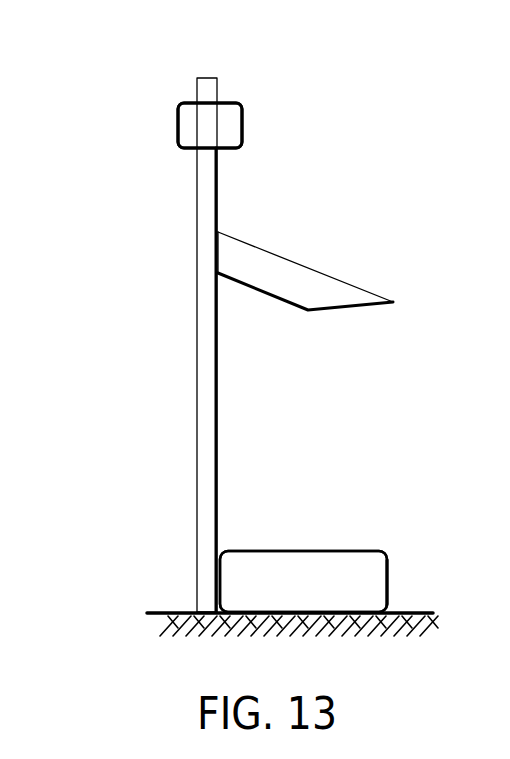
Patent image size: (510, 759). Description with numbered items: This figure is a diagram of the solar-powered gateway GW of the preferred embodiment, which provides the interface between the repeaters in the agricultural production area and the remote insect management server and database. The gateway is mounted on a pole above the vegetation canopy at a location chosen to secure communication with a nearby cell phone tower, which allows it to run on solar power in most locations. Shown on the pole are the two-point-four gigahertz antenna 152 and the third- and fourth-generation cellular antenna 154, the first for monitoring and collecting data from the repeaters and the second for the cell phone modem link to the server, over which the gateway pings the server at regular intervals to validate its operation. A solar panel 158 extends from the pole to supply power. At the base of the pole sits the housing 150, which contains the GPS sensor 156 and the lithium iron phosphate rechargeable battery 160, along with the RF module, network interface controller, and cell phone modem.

The housing 150 is at (308, 550).
The 2.4 GHz antenna 152 is at (178, 121).
The 3G/4G antenna 154 is at (210, 125).
The GPS sensor 156 is at (357, 550).
The solar panel 158 is at (305, 264).
The LiFeO4 rechargeable battery 160 is at (390, 580).